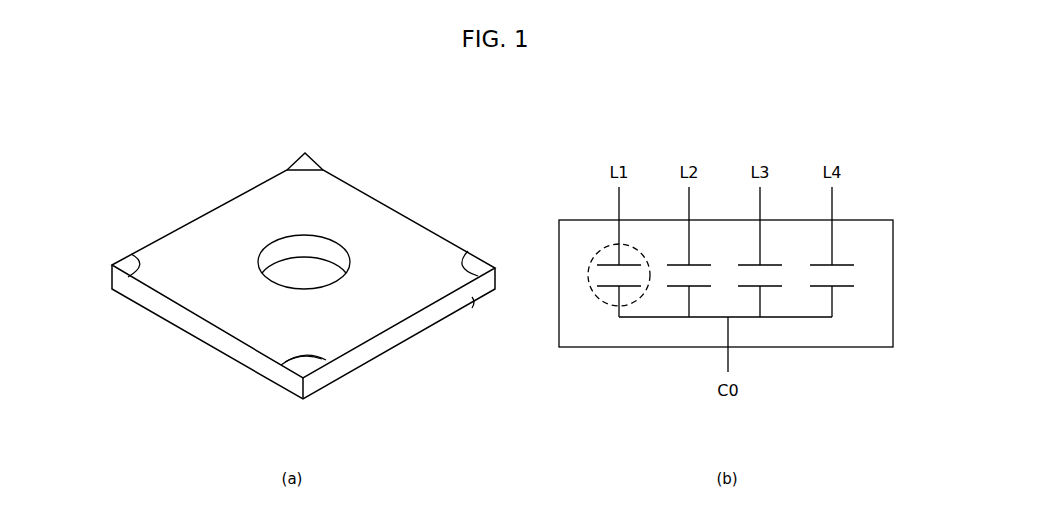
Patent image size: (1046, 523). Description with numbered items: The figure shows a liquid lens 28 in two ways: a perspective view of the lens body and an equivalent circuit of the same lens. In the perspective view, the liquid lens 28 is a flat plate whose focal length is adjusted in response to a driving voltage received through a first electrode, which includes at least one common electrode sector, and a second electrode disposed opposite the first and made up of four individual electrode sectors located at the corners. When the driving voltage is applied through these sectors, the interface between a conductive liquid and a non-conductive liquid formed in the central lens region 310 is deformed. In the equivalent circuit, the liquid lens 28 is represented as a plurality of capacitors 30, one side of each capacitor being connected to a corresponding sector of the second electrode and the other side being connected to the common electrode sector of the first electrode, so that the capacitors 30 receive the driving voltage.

The liquid lens 28 is at (228, 321).
The capacitors 30 is at (601, 252).
The lens region 310 is at (303, 268).